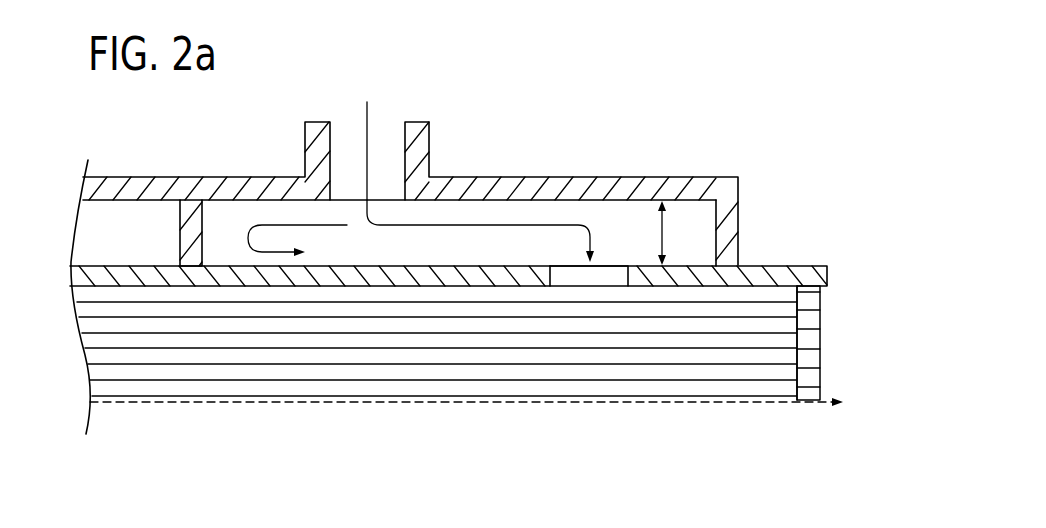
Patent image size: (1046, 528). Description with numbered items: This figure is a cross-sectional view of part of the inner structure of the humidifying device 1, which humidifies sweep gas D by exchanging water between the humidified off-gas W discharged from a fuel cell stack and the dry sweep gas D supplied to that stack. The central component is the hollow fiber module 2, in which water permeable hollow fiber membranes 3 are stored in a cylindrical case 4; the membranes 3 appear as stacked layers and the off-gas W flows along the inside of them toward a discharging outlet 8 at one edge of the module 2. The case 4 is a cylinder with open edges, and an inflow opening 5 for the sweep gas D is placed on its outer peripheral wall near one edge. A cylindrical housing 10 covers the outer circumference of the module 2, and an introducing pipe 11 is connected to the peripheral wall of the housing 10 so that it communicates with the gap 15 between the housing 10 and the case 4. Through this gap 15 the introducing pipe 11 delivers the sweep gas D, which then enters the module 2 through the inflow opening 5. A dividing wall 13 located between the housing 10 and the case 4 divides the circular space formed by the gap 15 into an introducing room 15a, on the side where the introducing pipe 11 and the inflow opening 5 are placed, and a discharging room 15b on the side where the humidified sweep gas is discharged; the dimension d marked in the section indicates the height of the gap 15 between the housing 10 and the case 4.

The humidifying device 1 is at (347, 430).
The hollow fiber module 2 is at (762, 257).
The hollow fiber membrane 3 is at (542, 383).
The case 4 is at (148, 267).
The inflow opening 5 is at (622, 278).
The discharging outlet 8 is at (820, 343).
The housing 10 is at (112, 176).
The introducing pipe 11 is at (430, 135).
The dividing wall 13 is at (203, 233).
The gap 15 is at (541, 212).
The introducing room 15a is at (272, 213).
The discharging room 15b is at (145, 218).
The sweep gas D is at (389, 121).
The channel height d is at (665, 232).
The off-gas W is at (720, 402).